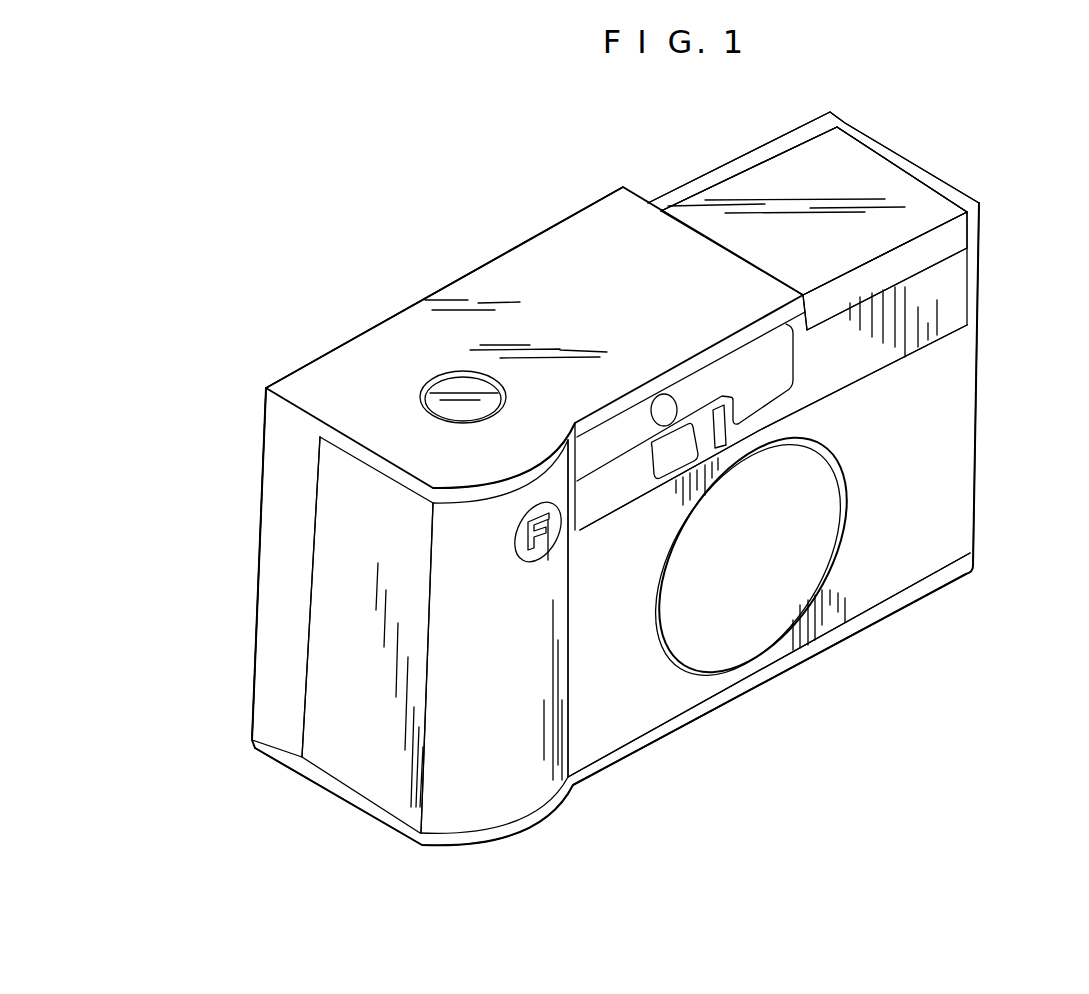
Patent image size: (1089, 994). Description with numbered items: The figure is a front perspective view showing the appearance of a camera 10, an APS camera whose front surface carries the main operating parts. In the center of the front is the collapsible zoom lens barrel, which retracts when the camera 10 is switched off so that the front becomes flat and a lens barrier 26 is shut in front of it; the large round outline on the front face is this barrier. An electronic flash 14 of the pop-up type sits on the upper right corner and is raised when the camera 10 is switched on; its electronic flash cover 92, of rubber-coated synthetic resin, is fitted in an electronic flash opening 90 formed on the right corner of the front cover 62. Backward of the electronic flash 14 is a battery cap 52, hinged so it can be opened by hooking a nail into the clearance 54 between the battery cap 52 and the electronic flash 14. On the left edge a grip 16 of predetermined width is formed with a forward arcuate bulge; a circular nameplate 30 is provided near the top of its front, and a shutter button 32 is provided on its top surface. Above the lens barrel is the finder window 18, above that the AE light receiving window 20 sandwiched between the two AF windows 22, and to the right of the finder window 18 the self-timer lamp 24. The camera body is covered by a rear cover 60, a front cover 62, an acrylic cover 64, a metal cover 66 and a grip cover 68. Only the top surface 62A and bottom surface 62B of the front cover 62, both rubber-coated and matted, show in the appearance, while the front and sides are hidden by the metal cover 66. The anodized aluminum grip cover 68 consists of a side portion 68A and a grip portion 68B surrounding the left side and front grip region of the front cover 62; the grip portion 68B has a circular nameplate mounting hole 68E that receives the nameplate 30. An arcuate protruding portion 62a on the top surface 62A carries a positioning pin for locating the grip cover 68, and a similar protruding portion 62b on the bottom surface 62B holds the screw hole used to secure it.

The camera 10 is at (426, 157).
The electronic flash 14 is at (914, 210).
The grip 16 is at (545, 765).
The finder window 18 is at (670, 477).
The AE light receiving window 20 is at (665, 402).
The AF window 22 is at (745, 372).
The self-timer lamp 24 is at (722, 442).
The lens barrier 26 is at (750, 625).
The nameplate 30 is at (535, 556).
The shutter button 32 is at (455, 385).
The battery cap 52 is at (711, 186).
The clearance 54 is at (772, 163).
The rear cover 60 is at (320, 382).
The front cover 62 is at (562, 322).
The top surface 62A is at (385, 398).
The protruding portion 62a is at (490, 474).
The bottom surface 62B is at (700, 710).
The protruding portion 62b is at (493, 848).
The acrylic cover 64 is at (950, 310).
The metal cover 66 is at (950, 447).
The grip cover 68 is at (370, 772).
The side portion 68A is at (350, 678).
The grip portion 68B is at (513, 793).
The nameplate mounting hole 68E is at (517, 540).
The electronic flash opening 90 is at (738, 256).
The electronic flash cover 92 is at (863, 190).